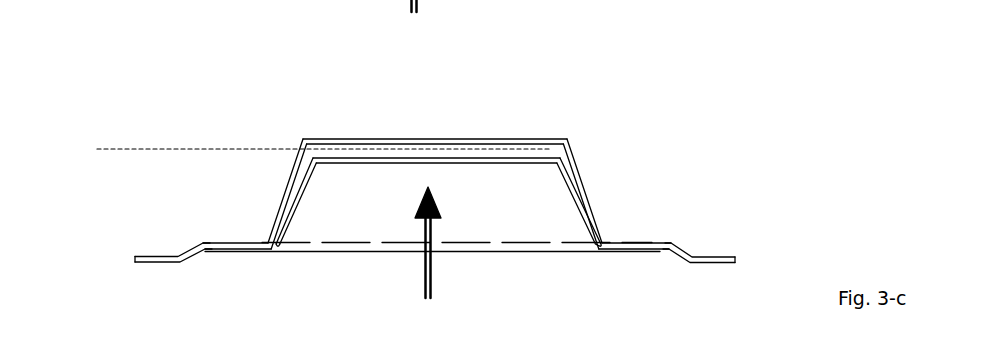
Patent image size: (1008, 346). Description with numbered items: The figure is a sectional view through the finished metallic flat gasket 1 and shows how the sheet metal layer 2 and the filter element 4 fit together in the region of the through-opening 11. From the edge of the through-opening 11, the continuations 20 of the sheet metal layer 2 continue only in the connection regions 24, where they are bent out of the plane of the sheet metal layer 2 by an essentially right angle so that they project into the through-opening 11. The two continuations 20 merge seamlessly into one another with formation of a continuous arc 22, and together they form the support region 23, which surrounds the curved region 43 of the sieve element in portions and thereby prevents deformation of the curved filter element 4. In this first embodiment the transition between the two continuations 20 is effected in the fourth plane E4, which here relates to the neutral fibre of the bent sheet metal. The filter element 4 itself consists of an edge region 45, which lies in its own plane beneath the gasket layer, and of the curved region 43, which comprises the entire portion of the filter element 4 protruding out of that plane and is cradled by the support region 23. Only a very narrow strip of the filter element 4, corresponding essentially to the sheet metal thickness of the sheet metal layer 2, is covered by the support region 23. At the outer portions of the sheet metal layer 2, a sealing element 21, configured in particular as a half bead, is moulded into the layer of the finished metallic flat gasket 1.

The metallic flat gasket 1 is at (252, 137).
The sheet metal layer 2 is at (700, 258).
The filter element 4 is at (409, 213).
The through-opening 11 is at (534, 264).
The continuations 20 is at (273, 204).
The sealing element 21 is at (191, 244).
The continuous arc 22 is at (377, 140).
The support region 23 is at (459, 140).
The connection regions 24 is at (265, 242).
The curved region 43 is at (311, 178).
The edge region 45 is at (262, 236).
The fourth plane E4 is at (304, 151).